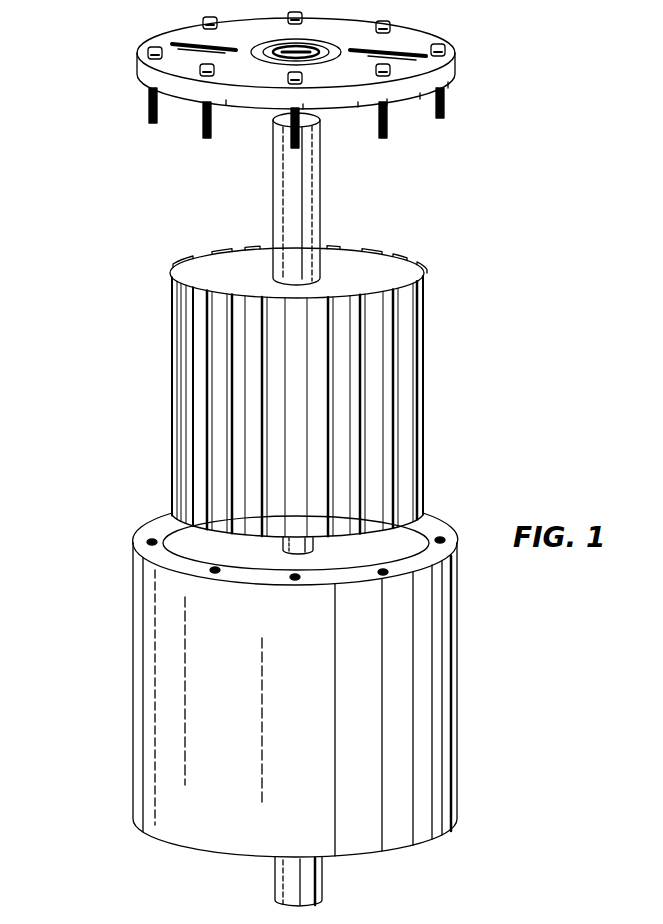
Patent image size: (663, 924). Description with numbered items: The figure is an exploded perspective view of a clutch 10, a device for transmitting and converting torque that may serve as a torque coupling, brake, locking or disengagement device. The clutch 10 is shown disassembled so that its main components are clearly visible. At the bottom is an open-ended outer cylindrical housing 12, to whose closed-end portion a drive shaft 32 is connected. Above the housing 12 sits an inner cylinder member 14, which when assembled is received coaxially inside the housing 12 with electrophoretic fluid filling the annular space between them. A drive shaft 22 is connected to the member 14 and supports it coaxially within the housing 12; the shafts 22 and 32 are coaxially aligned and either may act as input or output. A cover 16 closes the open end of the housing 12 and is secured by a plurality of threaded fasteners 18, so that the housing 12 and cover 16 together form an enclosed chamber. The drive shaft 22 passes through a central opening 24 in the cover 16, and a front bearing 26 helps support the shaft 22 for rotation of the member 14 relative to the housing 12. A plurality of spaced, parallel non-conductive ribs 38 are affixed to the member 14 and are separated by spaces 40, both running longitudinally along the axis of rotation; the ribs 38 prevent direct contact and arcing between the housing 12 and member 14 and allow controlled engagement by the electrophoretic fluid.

The clutch 10 is at (93, 378).
The outer cylindrical housing 12 is at (435, 677).
The inner cylinder member 14 is at (200, 267).
The cover 16 is at (183, 60).
The threaded fasteners 18 is at (203, 22).
The drive shaft 22 is at (307, 200).
The central opening 24 is at (300, 45).
The front bearing 26 is at (327, 57).
The drive shaft 32 is at (312, 882).
The ribs 38 is at (255, 297).
The spaces 40 is at (238, 323).